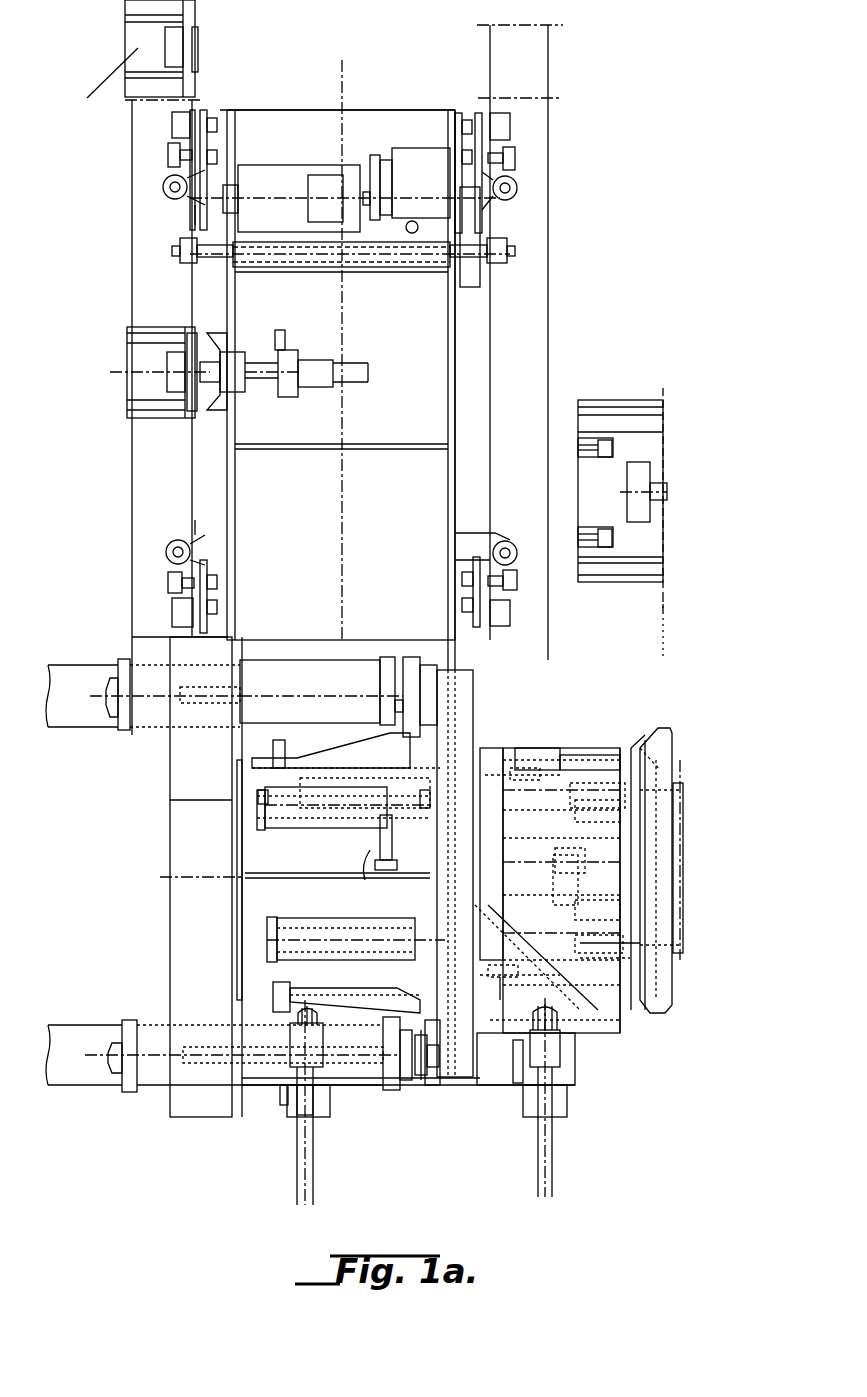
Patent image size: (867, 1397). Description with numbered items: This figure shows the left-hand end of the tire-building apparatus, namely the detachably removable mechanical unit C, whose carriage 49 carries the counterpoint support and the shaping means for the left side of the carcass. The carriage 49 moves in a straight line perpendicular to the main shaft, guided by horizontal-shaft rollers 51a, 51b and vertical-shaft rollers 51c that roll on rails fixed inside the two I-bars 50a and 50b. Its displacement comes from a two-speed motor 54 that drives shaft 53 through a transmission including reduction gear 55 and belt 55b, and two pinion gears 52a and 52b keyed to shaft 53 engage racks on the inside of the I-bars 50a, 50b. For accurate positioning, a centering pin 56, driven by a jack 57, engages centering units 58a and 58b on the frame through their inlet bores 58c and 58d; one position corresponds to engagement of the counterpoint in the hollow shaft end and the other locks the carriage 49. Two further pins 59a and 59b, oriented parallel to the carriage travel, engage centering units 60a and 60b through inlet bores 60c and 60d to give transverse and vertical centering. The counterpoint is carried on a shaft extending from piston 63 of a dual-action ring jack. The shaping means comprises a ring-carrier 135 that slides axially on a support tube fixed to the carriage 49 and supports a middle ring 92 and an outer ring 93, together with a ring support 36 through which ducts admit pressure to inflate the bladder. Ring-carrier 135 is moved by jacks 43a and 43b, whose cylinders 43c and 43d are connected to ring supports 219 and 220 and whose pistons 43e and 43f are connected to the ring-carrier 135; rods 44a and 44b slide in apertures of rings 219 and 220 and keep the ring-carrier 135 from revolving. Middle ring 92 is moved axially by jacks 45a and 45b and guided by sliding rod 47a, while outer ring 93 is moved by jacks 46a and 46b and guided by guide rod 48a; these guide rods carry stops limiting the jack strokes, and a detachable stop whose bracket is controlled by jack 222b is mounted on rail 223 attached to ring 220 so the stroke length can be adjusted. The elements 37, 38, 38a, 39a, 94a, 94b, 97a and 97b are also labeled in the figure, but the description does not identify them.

The ring support 36 is at (660, 805).
The housing 37 is at (482, 770).
The upper guide member 38 is at (542, 760).
The guide surface 38a is at (605, 768).
The guide rail 39a is at (572, 748).
The jack 43a is at (270, 683).
The jack 43b is at (383, 1080).
The cylinder 43c is at (250, 660).
The cylinder 43d is at (255, 1065).
The piston 43e is at (420, 660).
The piston 43f is at (425, 1060).
The guide rod 44a is at (280, 660).
The guide rod 44b is at (250, 1085).
The jack 45a is at (480, 793).
The jack 45b is at (295, 918).
The jack 46a is at (330, 750).
The jack 46b is at (275, 995).
The guide rod 47a is at (287, 822).
The guide rod 48a is at (273, 800).
The carriage 49 is at (455, 390).
The I-bar 50a is at (180, 417).
The I-bar 50b is at (520, 342).
The horizontal-shaft roller 51a is at (172, 125).
The horizontal-shaft roller 51b is at (168, 155).
The vertical-shaft roller 51c is at (163, 187).
The pinion gear 52a is at (183, 240).
The pinion gear 52b is at (500, 240).
The shaft 53 is at (330, 258).
The two-speed motor 54 is at (345, 198).
The reduction gear 55 is at (406, 190).
The belt 55b is at (473, 235).
The centering pin 56 is at (268, 380).
The jack 57 is at (356, 370).
The centering unit 58a is at (135, 372).
The centering unit 58b is at (172, 118).
The inlet bore 58c is at (172, 360).
The inlet bore 58d is at (168, 44).
The pin 59a is at (312, 1100).
The pin 59b is at (556, 1110).
The centering unit 60a is at (288, 1100).
The centering unit 60b is at (525, 1100).
The inlet bore 60c is at (297, 1112).
The inlet bore 60d is at (562, 1103).
The piston 63 is at (560, 865).
The middle cylindrical ring 92 is at (660, 795).
The outer cylindrical ring 93 is at (657, 740).
The upper slot 94a is at (625, 945).
The lower slot 94b is at (622, 955).
The upper stop 97a is at (525, 770).
The lower stop 97b is at (497, 980).
The ring-carrier 135 is at (462, 680).
The support ring 219 is at (432, 1070).
The support ring 220 is at (232, 920).
The jack 222b is at (372, 850).
The rail 223 is at (381, 907).
The mechanical unit C is at (70, 733).